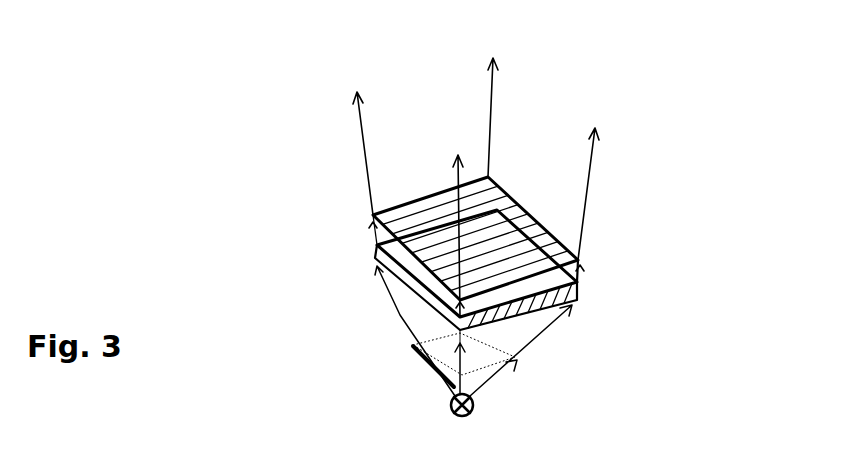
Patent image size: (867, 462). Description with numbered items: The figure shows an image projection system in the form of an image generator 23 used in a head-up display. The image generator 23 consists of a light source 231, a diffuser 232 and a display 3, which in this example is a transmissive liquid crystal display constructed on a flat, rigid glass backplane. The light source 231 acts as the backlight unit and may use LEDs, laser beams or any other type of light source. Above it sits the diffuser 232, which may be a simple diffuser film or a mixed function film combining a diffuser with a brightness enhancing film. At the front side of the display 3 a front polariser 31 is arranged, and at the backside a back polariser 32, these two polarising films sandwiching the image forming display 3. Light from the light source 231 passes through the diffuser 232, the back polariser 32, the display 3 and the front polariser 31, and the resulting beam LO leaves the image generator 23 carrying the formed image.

The image generator 23 is at (307, 252).
The display 3 is at (582, 280).
The front polariser 31 is at (580, 222).
The back polariser 32 is at (545, 315).
The light source 231 is at (483, 413).
The diffuser 232 is at (527, 362).
The beam LO is at (598, 165).